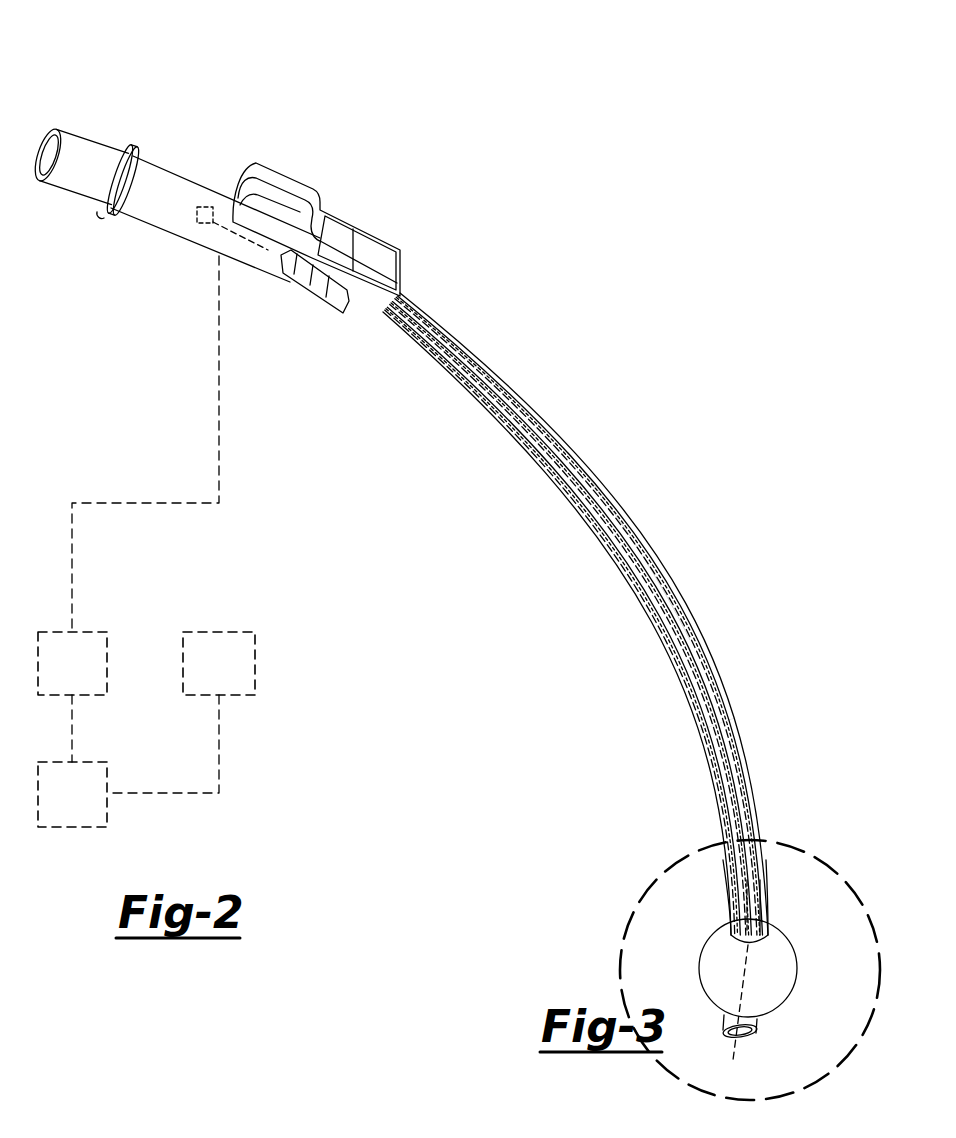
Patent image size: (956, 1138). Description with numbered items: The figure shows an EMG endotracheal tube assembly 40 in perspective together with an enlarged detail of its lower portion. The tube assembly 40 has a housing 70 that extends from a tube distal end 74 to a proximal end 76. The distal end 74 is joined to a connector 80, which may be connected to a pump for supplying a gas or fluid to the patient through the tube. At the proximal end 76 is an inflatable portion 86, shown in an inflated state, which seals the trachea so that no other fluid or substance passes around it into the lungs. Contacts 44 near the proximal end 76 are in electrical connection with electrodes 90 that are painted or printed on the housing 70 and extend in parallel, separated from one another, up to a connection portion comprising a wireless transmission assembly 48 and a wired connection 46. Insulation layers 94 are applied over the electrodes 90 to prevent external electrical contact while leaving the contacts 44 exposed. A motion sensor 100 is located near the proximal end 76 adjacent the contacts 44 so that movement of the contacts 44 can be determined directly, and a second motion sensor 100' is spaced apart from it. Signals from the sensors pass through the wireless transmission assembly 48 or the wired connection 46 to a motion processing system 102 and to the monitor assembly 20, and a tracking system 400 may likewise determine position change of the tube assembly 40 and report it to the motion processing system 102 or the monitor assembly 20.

In FIG. 2, the tube distal end 74 is at (53, 131).
In FIG. 2, the connector 80 is at (100, 215).
In FIG. 2, the housing 70 is at (623, 513).
In FIG. 2, the second motion sensor 100' is at (232, 159).
In FIG. 2, the wireless transmission assembly 48 is at (303, 178).
In FIG. 2, the EMG endotracheal tube assembly 40 is at (535, 176).
In FIG. 2, the insulation layers 94 is at (573, 450).
In FIG. 2, the electrodes 90 is at (700, 730).
In FIG. 2, the wired connection 46 is at (219, 480).
In FIG. 2, the tracking system 400 is at (90, 676).
In FIG. 2, the monitor assembly 20 is at (235, 676).
In FIG. 2, the motion processing system 102 is at (90, 806).
In FIG. 3, the contacts 44 is at (733, 880).
In FIG. 3, the inflatable portion 86 is at (790, 963).
In FIG. 3, the motion sensor 100 is at (763, 1002).
In FIG. 3, the tube proximal end 76 is at (753, 1047).